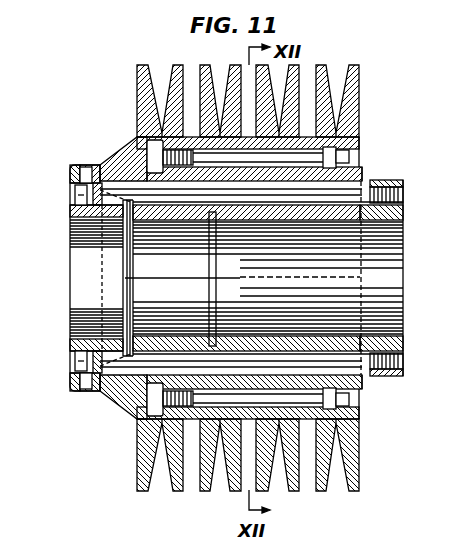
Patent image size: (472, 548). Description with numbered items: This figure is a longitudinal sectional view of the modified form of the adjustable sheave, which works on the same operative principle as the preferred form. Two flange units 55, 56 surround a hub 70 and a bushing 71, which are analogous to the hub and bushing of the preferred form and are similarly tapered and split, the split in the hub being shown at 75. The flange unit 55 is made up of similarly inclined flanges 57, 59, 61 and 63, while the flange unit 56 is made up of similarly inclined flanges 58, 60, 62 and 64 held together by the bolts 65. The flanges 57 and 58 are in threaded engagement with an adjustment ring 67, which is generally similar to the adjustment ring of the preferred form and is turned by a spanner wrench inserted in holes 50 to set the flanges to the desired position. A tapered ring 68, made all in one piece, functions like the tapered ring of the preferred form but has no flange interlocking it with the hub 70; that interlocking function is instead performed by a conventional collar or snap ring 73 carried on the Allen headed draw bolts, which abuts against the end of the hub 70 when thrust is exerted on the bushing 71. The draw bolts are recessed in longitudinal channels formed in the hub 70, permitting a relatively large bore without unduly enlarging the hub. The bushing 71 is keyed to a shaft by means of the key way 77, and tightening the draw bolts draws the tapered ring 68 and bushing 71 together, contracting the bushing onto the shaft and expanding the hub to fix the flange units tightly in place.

The spanner wrench holes 50 is at (88, 166).
The flange unit 55 is at (128, 410).
The flange unit 56 is at (372, 76).
The inclined flange 57 is at (142, 492).
The inclined flange 58 is at (181, 66).
The inclined flange 59 is at (204, 492).
The inclined flange 60 is at (239, 66).
The inclined flange 61 is at (261, 489).
The inclined flange 62 is at (300, 65).
The inclined flange 63 is at (318, 489).
The inclined flange 64 is at (359, 67).
The bolts 65 is at (348, 160).
The adjustment ring 67 is at (72, 167).
The tapered ring 68 is at (83, 343).
The hub 70 is at (177, 215).
The bushing 71 is at (401, 327).
The snap ring 73 is at (368, 181).
The split 75 is at (170, 280).
The key way 77 is at (72, 195).